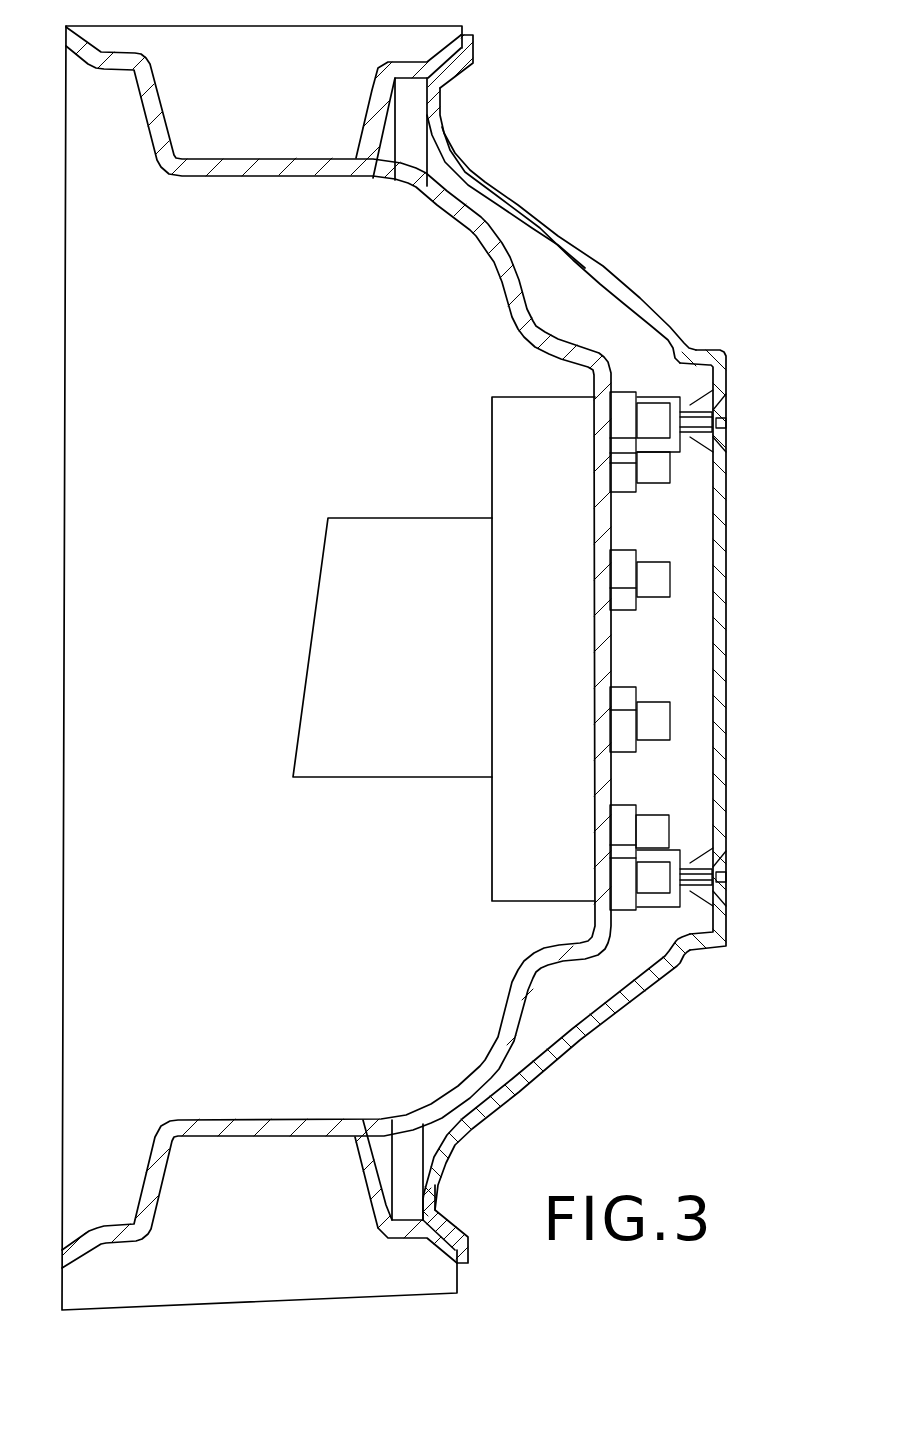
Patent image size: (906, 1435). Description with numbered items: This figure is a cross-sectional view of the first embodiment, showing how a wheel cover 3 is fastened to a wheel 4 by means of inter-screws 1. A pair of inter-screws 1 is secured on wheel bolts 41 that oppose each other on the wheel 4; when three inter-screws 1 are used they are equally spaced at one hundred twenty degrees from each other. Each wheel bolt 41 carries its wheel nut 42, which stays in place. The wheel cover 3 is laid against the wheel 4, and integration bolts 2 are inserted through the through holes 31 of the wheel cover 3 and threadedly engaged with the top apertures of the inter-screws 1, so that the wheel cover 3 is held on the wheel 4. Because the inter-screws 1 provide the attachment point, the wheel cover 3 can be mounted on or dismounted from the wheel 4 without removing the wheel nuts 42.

The inter-screw 1 is at (641, 397).
The integration bolt 2 is at (720, 418).
The wheel cover 3 is at (727, 545).
The wheel 4 is at (482, 223).
The through hole 31 is at (708, 417).
The wheel bolt 41 is at (657, 413).
The wheel nut 42 is at (624, 392).